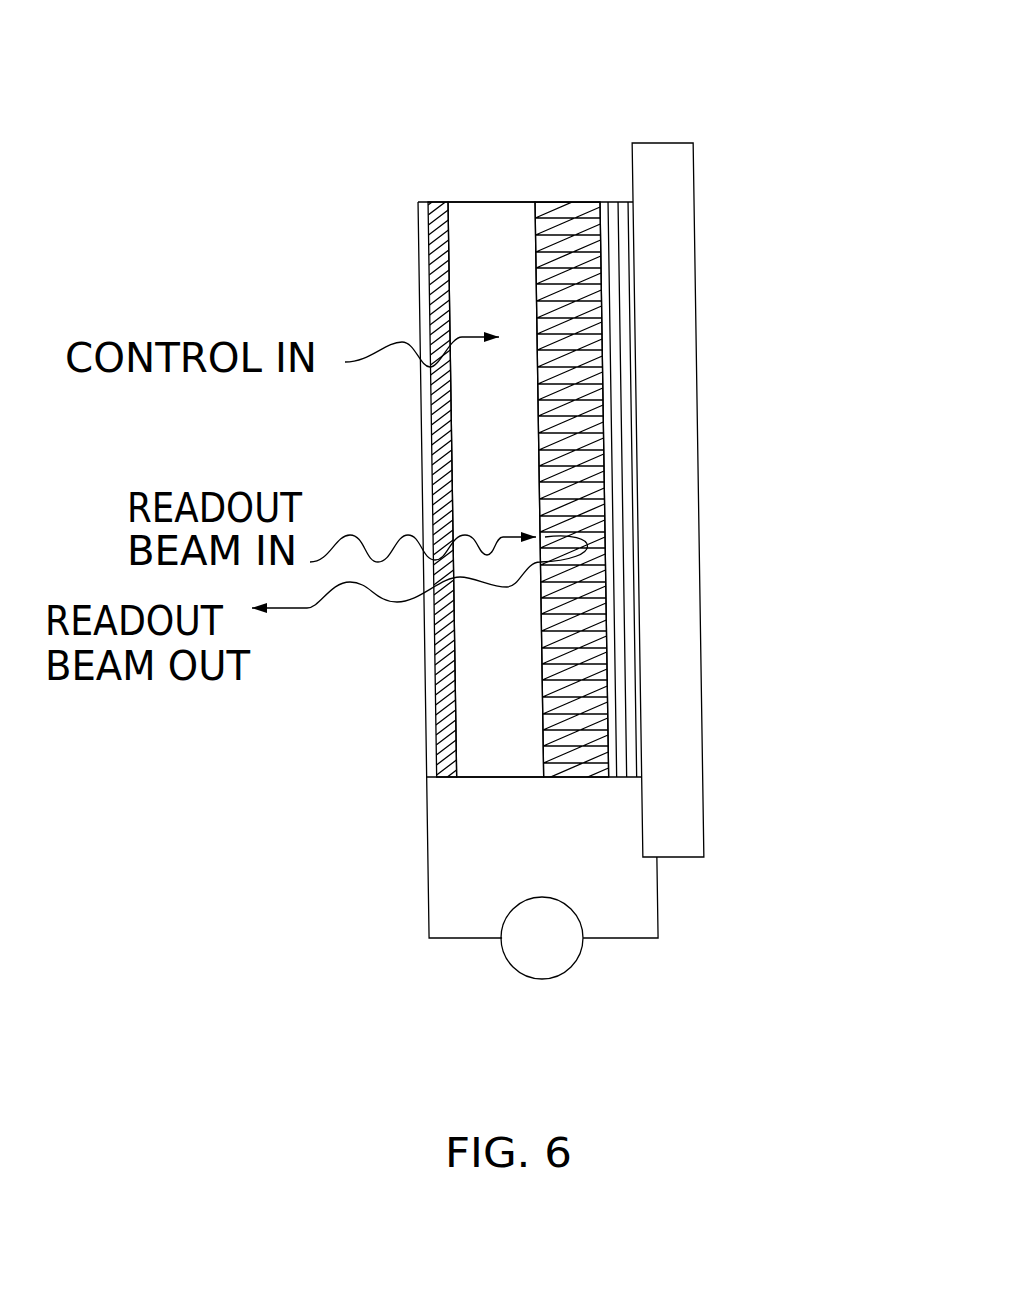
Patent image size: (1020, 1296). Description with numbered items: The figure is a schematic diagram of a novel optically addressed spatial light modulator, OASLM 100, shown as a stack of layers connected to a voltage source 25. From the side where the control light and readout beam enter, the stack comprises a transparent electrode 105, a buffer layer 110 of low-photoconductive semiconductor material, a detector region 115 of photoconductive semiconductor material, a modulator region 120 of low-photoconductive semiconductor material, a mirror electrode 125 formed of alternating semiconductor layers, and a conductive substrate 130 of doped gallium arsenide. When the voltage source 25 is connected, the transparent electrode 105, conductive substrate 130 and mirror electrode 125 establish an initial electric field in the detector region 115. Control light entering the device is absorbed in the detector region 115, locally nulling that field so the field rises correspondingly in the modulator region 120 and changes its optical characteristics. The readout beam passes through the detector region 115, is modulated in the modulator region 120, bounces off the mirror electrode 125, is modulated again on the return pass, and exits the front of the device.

The OASLM 100 is at (227, 763).
The transparent electrode 105 is at (415, 243).
The buffer layer 110 is at (435, 201).
The detector region 115 is at (497, 712).
The modulator region 120 is at (564, 201).
The mirror electrode 125 is at (617, 201).
The conductive substrate 130 is at (673, 362).
The voltage source 25 is at (555, 955).